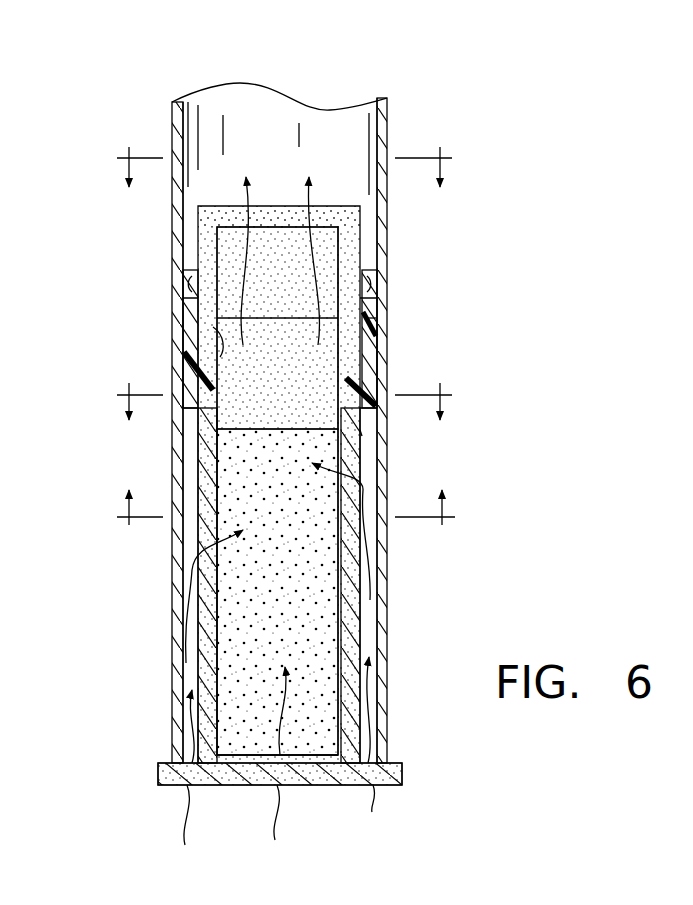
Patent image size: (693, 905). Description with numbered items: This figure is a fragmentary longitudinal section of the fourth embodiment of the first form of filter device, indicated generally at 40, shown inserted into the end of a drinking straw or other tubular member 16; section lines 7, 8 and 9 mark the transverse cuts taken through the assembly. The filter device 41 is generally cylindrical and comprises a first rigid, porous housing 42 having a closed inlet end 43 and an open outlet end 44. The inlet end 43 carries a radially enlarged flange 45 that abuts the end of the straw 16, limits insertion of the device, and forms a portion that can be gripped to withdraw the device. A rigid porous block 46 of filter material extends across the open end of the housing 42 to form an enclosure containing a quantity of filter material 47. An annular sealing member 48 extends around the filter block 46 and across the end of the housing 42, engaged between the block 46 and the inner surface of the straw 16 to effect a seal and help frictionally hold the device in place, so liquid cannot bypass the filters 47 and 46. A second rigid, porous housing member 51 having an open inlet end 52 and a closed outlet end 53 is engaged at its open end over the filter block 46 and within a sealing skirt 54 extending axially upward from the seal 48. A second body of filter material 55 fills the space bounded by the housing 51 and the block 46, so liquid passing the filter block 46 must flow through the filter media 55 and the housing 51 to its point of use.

The straw 16 is at (172, 455).
The fourth embodiment of the first form of filter device 40 is at (486, 460).
The filter device 41 is at (370, 608).
The first rigid porous housing 42 is at (197, 683).
The closed inlet end 43 is at (240, 785).
The open outlet end 44 is at (218, 480).
The radially enlarged flange 45 is at (403, 773).
The rigid porous filter block 46 is at (330, 355).
The filter material 47 is at (302, 740).
The annular sealing member 48 is at (360, 433).
The second rigid porous housing member 51 is at (362, 228).
The open inlet end 52 is at (213, 327).
The closed outlet end 53 is at (332, 207).
The sealing skirt 54 is at (368, 318).
The second body of filter material 55 is at (292, 243).
The section line 7- 7 is at (286, 511).
The section line 8- 8 is at (286, 167).
The section line 9- 9 is at (285, 401).